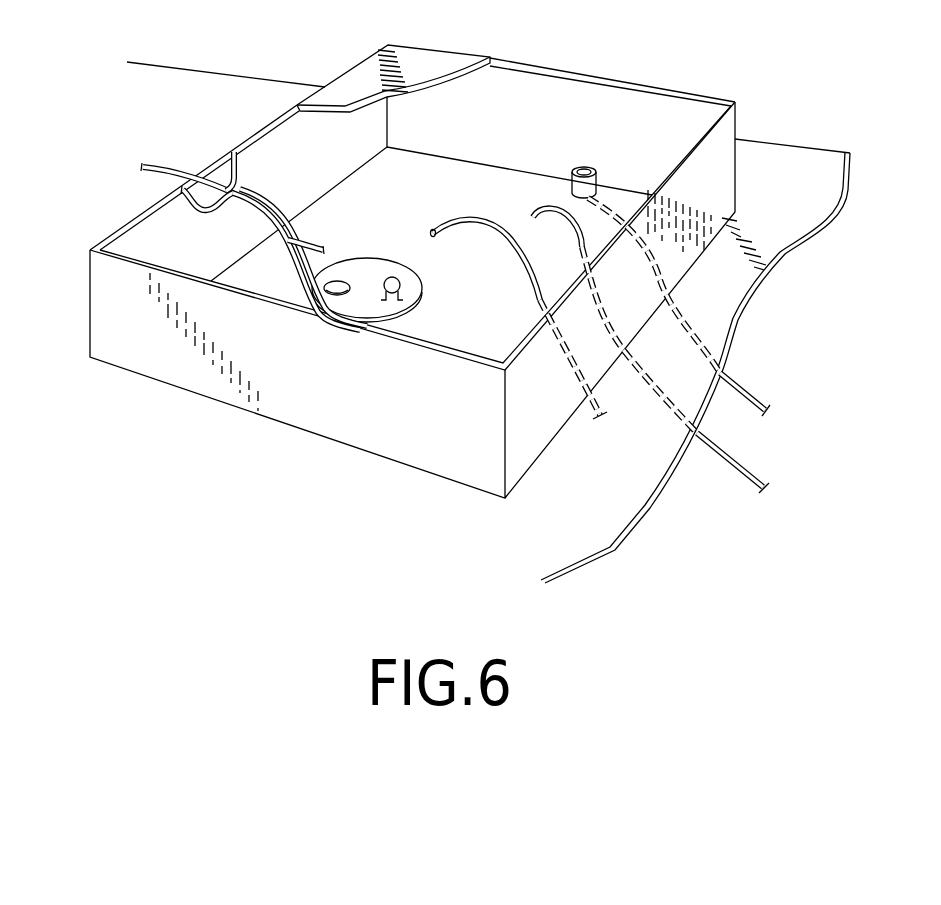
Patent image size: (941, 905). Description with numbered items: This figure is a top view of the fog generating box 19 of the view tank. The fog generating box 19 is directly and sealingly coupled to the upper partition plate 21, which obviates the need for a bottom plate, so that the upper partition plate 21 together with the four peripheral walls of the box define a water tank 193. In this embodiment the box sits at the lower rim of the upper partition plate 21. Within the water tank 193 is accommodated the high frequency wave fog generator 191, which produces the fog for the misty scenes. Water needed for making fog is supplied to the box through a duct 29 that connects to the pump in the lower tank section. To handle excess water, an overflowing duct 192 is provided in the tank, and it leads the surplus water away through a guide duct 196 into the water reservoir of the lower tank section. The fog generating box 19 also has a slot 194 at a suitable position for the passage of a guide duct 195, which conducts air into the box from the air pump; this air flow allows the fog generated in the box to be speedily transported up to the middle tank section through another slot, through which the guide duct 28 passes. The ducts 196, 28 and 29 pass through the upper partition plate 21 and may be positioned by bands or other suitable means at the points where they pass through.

The fog generating box 19 is at (660, 72).
The upper partition plate 21 is at (784, 158).
The guide duct 28 is at (471, 221).
The duct 29 is at (738, 463).
The high frequency wave fog generator 191 is at (389, 277).
The overflowing duct 192 is at (584, 166).
The water tank 193 is at (192, 220).
The slot 194 is at (211, 168).
The guide duct 195 is at (281, 243).
The guide duct 196 is at (765, 401).